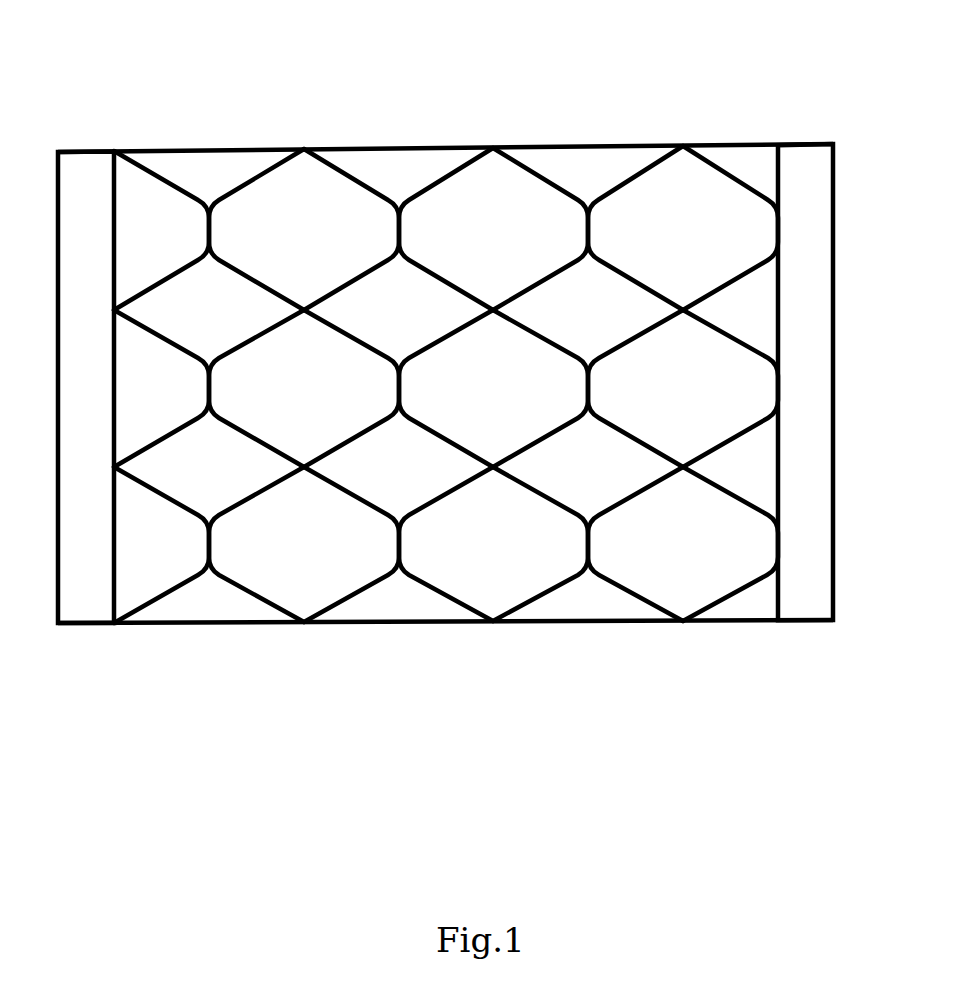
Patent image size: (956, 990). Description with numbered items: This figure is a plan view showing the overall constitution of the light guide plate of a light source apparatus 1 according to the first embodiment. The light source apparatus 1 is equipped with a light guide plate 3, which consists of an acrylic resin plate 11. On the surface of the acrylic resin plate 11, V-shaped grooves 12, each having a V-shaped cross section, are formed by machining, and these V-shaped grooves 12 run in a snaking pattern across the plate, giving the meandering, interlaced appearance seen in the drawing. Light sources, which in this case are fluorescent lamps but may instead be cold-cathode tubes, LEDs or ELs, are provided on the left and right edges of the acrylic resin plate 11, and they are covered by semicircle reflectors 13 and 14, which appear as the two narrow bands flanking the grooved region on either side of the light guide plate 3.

The light source apparatus 1 is at (483, 93).
The light guide plate 3 is at (773, 631).
The acrylic resin plate 11 is at (347, 147).
The V-shaped grooves 12 is at (533, 167).
The semicircle reflector 13 is at (84, 150).
The semicircle reflector 14 is at (789, 156).